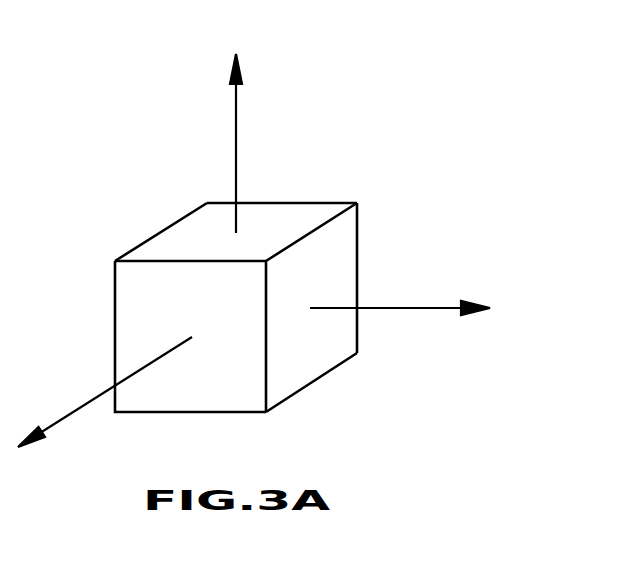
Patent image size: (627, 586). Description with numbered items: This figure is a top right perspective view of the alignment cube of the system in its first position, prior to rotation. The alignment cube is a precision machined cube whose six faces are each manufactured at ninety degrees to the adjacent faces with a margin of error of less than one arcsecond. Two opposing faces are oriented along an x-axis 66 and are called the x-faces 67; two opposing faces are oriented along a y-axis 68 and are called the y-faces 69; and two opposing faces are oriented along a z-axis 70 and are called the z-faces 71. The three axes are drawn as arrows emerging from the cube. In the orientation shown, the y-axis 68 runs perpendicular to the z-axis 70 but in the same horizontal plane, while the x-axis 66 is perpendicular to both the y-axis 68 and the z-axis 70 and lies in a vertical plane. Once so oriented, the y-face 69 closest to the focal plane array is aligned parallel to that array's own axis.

The x-axis 66 is at (237, 121).
The x-face 67 is at (285, 220).
The y-axis 68 is at (75, 408).
The y-face 69 is at (142, 313).
The z-axis 70 is at (414, 307).
The z-face 71 is at (145, 243).